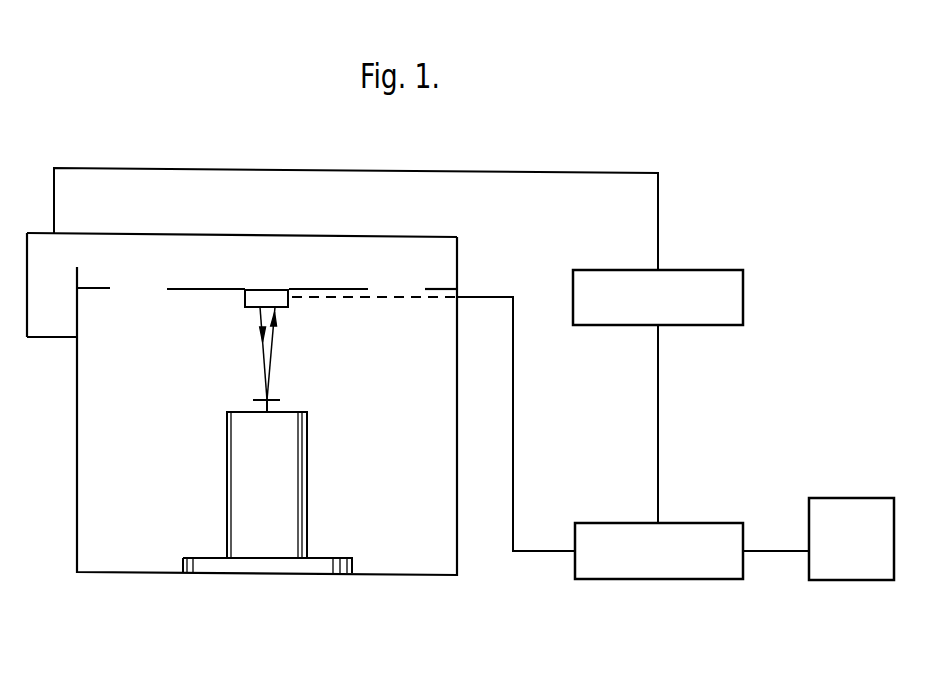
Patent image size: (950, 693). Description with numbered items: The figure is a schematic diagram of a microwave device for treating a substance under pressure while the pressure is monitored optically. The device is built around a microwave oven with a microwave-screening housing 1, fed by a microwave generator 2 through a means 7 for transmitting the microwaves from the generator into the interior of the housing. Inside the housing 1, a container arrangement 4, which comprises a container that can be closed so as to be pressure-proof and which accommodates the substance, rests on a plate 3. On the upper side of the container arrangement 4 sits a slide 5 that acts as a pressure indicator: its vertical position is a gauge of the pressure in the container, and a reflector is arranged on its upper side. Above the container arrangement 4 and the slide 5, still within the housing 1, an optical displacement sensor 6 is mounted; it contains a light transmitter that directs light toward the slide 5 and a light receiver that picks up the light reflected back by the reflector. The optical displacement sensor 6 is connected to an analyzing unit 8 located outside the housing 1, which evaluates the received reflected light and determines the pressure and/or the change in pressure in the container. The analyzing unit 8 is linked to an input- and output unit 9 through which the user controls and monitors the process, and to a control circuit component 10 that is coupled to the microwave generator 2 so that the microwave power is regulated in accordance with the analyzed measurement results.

The microwave-screening housing 1 is at (77, 495).
The microwave generator 2 is at (45, 338).
The plate 3 is at (183, 561).
The container arrangement 4 is at (233, 489).
The slide 5 is at (262, 398).
The optical displacement sensor 6 is at (243, 298).
The means for transmitting the microwaves 7 is at (243, 256).
The analyzing unit 8 is at (690, 576).
The input- and output unit 9 is at (843, 578).
The control circuit component 10 is at (737, 294).